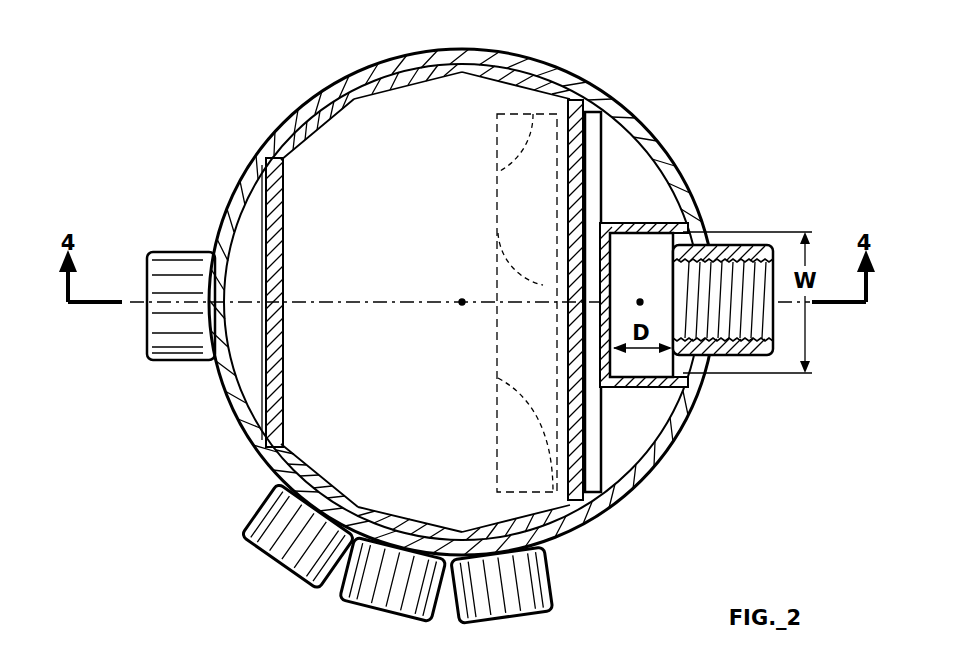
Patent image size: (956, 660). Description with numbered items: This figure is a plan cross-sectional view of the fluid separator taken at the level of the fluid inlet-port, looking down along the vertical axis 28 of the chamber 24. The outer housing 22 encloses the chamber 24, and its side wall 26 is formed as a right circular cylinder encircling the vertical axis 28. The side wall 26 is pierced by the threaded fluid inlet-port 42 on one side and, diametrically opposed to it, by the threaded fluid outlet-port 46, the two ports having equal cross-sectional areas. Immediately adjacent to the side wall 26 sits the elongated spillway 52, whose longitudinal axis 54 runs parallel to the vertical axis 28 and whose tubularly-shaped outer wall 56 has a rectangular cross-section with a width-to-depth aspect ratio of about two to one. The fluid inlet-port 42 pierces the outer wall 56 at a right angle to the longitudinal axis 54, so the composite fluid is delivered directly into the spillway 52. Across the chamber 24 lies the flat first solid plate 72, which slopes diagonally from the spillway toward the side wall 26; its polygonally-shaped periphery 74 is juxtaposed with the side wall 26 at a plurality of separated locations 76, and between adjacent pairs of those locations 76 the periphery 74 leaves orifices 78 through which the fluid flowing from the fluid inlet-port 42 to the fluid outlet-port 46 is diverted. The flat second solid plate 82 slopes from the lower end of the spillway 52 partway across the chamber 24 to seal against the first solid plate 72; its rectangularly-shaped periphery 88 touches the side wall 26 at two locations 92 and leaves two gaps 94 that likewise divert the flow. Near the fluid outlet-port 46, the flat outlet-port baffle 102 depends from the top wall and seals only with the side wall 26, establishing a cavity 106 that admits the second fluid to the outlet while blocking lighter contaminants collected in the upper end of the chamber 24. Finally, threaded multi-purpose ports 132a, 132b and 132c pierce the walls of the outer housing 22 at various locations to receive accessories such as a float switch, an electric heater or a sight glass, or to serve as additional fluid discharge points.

The outer housing 22 is at (649, 477).
The chamber 24 is at (387, 293).
The side wall 26 is at (646, 130).
The vertical axis 28 is at (462, 302).
The fluid inlet-port 42 is at (733, 370).
The fluid outlet-port 46 is at (196, 250).
The spillway 52 is at (680, 222).
The longitudinal axis 54 is at (640, 302).
The outer wall 56 is at (645, 392).
The first solid plate 72 is at (254, 453).
The periphery 74 is at (381, 90).
The locations 76 is at (464, 54).
The orifices 78 is at (519, 55).
The second solid plate 82 is at (498, 233).
The periphery 88 is at (498, 172).
The locations 92 is at (590, 108).
The gaps 94 is at (588, 100).
The outlet-port baffle 102 is at (287, 255).
The cavity 106 is at (250, 323).
The multi-purpose port 132a is at (277, 543).
The multi-purpose port 132b is at (377, 592).
The multi-purpose port 132c is at (523, 583).